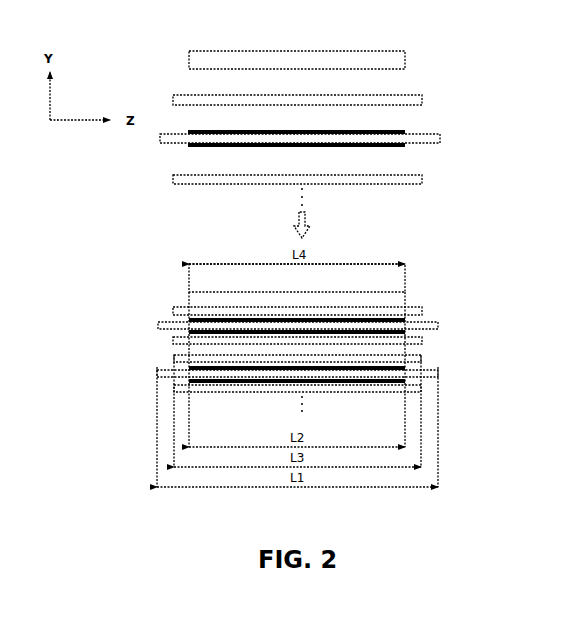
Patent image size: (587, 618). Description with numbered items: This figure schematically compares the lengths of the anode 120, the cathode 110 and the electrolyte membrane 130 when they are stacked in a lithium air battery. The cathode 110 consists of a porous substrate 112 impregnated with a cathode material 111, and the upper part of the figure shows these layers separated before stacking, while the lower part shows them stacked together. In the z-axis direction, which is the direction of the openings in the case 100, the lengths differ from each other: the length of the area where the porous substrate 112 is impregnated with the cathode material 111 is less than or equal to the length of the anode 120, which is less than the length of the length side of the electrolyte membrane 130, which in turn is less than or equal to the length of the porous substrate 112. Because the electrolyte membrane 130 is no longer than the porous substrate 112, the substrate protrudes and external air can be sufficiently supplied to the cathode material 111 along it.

The case 100 is at (431, 250).
The cathode 110 is at (353, 246).
The cathode material 111 is at (407, 131).
The porous substrate 112 is at (442, 139).
The anode 120 is at (407, 60).
The electrolyte membrane 130 is at (424, 99).